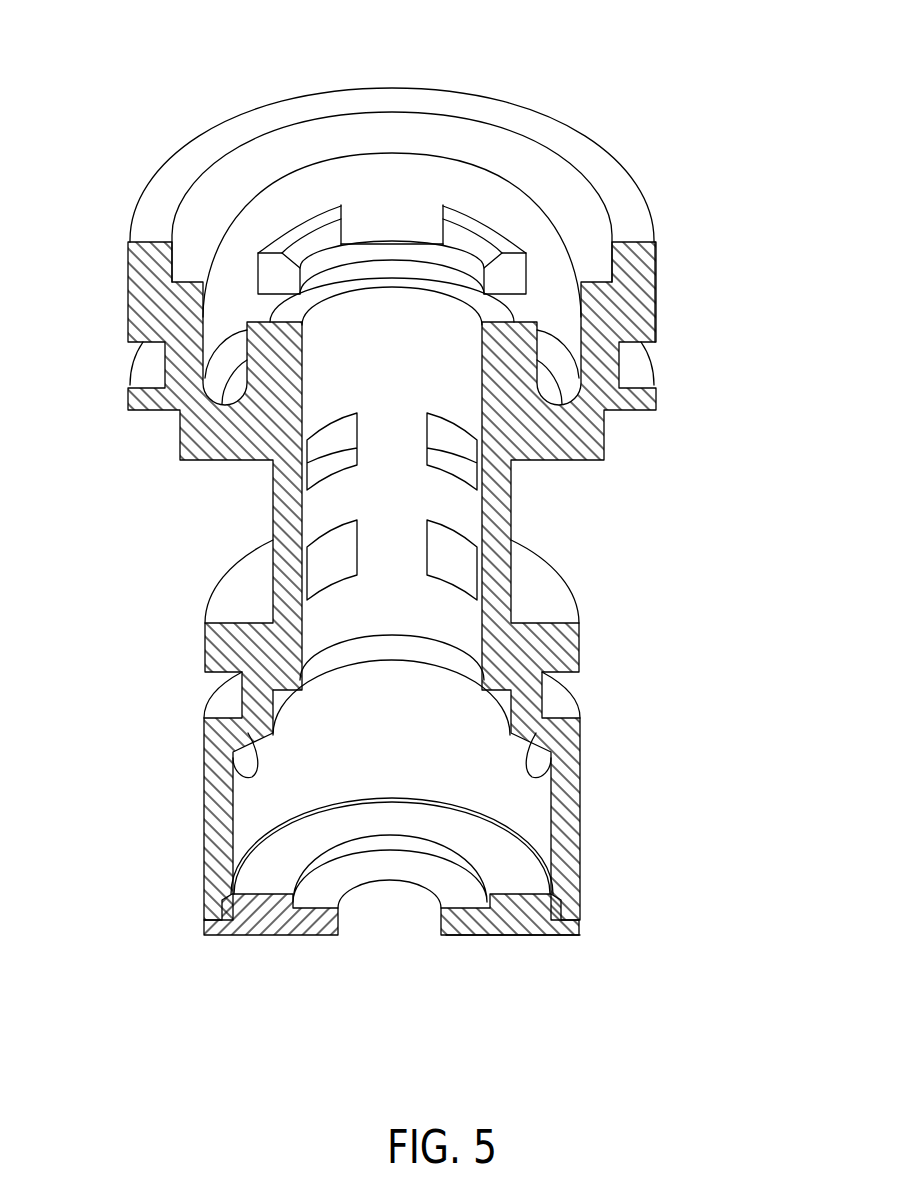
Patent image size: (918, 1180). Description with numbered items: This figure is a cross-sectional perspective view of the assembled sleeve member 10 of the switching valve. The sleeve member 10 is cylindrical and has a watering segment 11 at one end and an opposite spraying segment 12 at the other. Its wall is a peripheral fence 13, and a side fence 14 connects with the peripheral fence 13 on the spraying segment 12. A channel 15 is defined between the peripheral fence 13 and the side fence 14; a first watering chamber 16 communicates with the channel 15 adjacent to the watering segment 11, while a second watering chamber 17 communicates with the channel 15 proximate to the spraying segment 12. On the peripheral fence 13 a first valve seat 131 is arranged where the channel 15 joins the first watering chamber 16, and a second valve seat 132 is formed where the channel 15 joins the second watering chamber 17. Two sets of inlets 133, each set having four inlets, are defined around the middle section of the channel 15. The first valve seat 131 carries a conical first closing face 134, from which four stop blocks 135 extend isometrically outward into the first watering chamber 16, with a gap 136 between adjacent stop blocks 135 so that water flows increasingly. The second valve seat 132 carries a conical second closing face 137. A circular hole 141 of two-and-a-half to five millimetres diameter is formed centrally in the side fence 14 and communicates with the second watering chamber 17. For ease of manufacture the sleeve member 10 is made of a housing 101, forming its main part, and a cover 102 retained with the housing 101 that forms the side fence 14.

The sleeve member 10 is at (407, 511).
The watering segment 11 is at (543, 120).
The first watering chamber 16 is at (222, 180).
The housing 101 is at (660, 287).
The cover 102 is at (518, 940).
The spraying segment 12 is at (282, 935).
The peripheral fence 13 is at (273, 503).
The first valve seat 131 is at (250, 345).
The second valve seat 132 is at (233, 758).
The inlet 133 is at (453, 440).
The first closing face 134 is at (367, 270).
The stop blocks 135 is at (297, 227).
The gap 136 is at (402, 247).
The second closing face 137 is at (551, 760).
The side fence 14 is at (278, 862).
The hole 141 is at (387, 890).
The channel 15 is at (457, 507).
The second watering chamber 17 is at (582, 826).